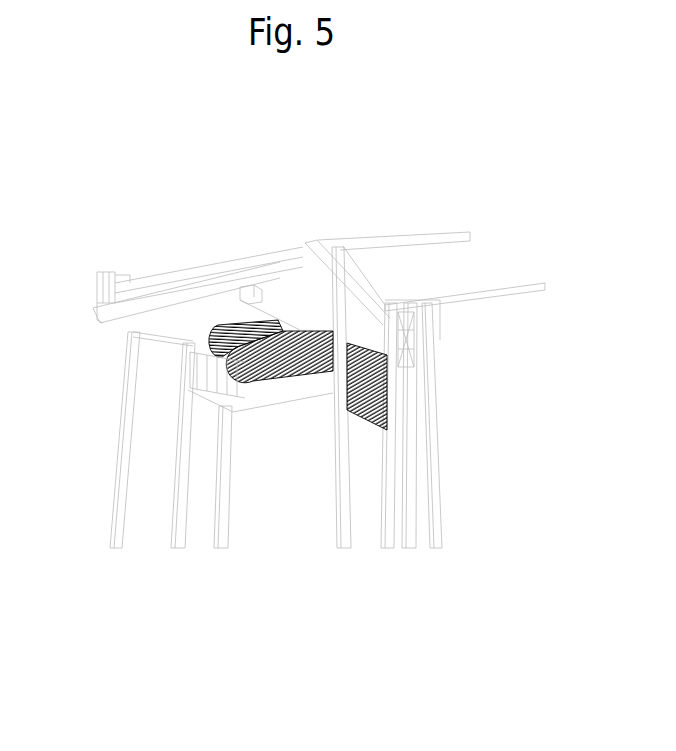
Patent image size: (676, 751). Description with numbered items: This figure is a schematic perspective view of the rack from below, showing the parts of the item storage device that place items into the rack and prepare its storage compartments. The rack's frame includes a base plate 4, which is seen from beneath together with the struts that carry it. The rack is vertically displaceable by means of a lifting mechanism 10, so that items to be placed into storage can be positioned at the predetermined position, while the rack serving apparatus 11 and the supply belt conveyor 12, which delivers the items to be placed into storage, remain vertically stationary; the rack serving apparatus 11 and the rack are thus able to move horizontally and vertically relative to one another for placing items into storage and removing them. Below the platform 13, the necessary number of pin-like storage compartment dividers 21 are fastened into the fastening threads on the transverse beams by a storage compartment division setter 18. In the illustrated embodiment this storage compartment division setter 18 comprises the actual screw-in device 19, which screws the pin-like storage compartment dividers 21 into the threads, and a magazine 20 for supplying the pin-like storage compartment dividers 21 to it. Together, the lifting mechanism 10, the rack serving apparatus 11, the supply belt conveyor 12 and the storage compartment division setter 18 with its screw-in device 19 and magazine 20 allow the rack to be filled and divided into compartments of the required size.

The base plate 4 is at (273, 400).
The lifting mechanism 10 is at (442, 457).
The rack serving apparatus 11 is at (113, 351).
The supply belt conveyor 12 is at (460, 297).
The platform 13 is at (189, 339).
The storage compartment division setter 18 is at (248, 380).
The screw-in device 19 is at (264, 298).
The magazine 20 is at (370, 383).
The pin-like storage compartment dividers 21 is at (312, 338).